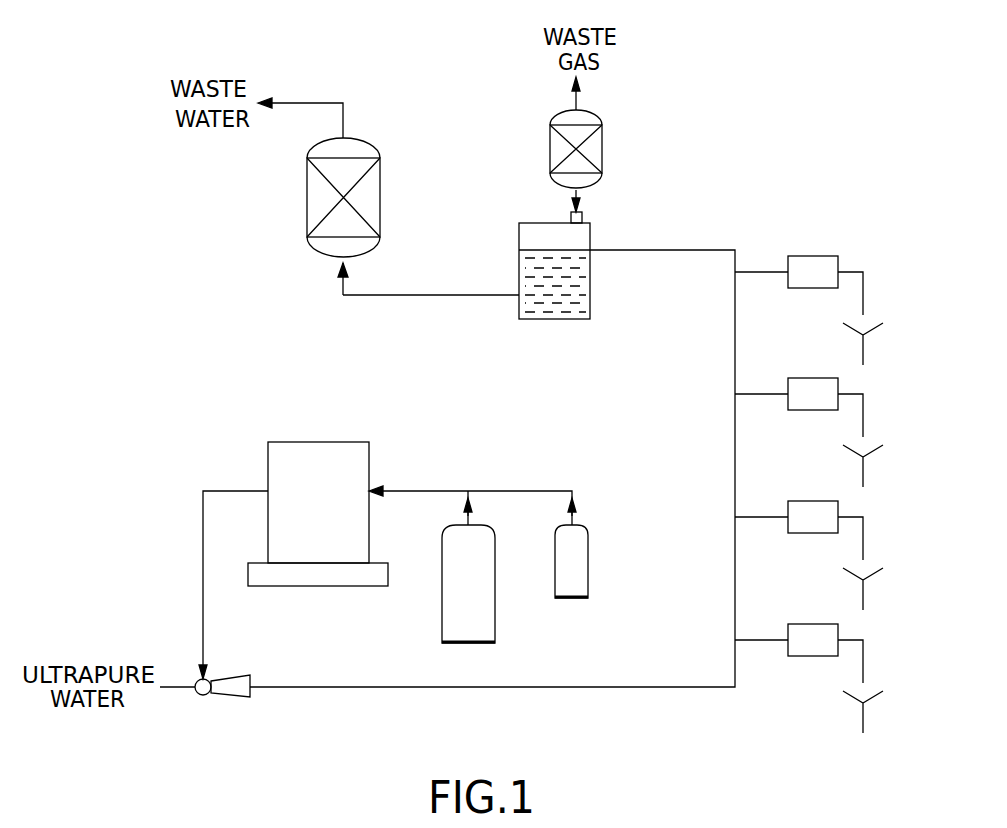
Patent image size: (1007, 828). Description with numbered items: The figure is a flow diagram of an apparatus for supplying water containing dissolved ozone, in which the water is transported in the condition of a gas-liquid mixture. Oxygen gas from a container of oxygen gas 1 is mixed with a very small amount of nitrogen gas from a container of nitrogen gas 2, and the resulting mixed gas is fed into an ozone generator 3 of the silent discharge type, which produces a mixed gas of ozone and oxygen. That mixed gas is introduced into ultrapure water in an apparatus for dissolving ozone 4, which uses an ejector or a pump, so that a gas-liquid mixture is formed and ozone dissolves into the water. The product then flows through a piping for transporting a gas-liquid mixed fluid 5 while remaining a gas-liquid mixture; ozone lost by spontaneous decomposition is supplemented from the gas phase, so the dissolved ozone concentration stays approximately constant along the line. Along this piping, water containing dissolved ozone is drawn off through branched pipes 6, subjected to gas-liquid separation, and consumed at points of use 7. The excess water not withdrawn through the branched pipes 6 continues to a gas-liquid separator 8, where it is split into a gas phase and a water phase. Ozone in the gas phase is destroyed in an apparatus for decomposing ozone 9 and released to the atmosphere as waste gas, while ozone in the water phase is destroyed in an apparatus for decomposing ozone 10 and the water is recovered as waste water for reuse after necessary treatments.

The container of oxygen gas 1 is at (495, 622).
The container of nitrogen gas 2 is at (588, 572).
The ozone generator 3 is at (318, 442).
The apparatus for dissolving ozone 4 is at (232, 698).
The piping for transporting a gas-liquid mixed fluid 5 is at (633, 688).
The branched pipes 6 is at (760, 272).
The points of use 7 is at (865, 350).
The gas-liquid separator 8 is at (553, 320).
The apparatus for decomposing ozone 9 is at (550, 148).
The apparatus for decomposing ozone 10 is at (307, 200).